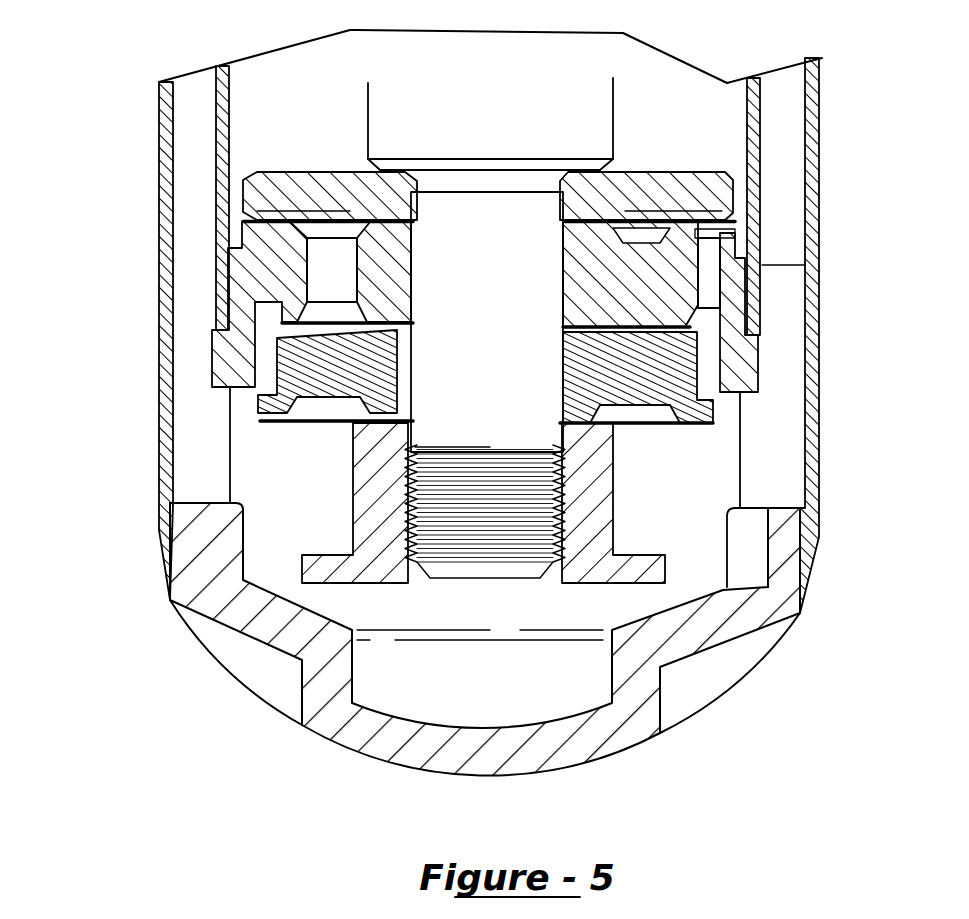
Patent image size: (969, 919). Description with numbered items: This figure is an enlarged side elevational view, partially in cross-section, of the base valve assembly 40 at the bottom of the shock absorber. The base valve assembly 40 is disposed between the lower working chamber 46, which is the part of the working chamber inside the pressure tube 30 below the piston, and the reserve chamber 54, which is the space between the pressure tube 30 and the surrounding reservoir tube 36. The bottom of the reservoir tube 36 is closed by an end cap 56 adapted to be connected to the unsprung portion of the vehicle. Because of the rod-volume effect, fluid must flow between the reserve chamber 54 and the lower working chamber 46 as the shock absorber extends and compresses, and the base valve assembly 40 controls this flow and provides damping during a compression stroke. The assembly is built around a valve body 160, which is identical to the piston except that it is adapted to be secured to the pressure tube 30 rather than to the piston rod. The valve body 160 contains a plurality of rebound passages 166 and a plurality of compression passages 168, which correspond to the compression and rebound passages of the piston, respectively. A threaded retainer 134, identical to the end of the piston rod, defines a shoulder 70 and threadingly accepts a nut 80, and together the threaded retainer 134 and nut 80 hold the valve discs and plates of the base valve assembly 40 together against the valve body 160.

The pressure tube 30 is at (762, 118).
The reservoir tube 36 is at (822, 70).
The base valve assembly 40 is at (782, 446).
The lower working chamber 46 is at (694, 134).
The reserve chamber 54 is at (786, 173).
The end cap 56 is at (610, 742).
The shoulder 70 is at (585, 195).
The nut 80 is at (300, 557).
The threaded retainer 134 is at (447, 493).
The valve body 160 is at (230, 252).
The rebound passages 166 is at (710, 277).
The compression passages 168 is at (332, 268).